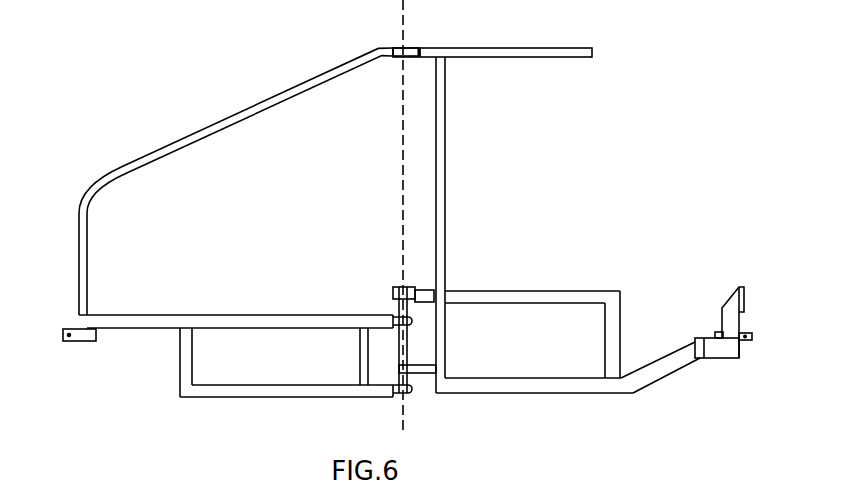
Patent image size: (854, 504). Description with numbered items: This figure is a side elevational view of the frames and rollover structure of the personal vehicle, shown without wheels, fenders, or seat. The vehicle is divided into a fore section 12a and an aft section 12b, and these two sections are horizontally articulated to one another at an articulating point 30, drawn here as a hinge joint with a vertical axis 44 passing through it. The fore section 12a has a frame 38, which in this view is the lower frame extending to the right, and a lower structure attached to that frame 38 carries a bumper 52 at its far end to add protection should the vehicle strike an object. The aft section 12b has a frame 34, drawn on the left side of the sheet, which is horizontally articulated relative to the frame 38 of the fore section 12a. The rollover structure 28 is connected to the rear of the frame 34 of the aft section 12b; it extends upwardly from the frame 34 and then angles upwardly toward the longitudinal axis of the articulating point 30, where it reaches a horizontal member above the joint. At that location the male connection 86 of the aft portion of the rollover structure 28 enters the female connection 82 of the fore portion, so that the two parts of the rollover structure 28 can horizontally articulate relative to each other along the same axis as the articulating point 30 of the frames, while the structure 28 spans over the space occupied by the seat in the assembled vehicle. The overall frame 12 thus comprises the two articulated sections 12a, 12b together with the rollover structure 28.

The frame 12 is at (399, 333).
The fore section 12a is at (645, 404).
The aft section 12b is at (171, 419).
The rollover structure 28 is at (262, 101).
The articulating point 30 is at (405, 394).
The frame 34 is at (180, 362).
The frame 38 is at (596, 394).
The pivot axis 44 is at (400, 176).
The bumper 52 is at (745, 300).
The female connection 82 is at (421, 50).
The male connection 86 is at (390, 47).